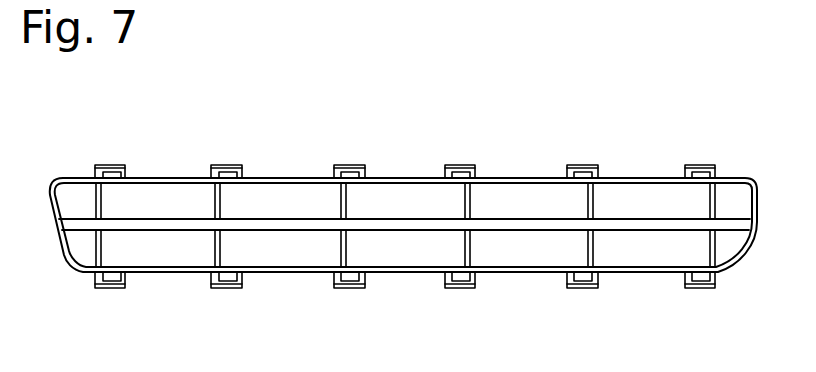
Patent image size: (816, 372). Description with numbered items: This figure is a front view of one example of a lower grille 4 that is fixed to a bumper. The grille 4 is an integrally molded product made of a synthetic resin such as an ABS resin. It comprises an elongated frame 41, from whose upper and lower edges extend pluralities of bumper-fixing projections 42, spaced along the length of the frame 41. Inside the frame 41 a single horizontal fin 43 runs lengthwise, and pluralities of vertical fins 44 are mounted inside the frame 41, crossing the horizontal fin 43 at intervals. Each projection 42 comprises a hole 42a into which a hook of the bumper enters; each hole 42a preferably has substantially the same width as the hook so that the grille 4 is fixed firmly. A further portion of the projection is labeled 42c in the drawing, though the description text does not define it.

The grille 4 is at (403, 136).
The frame 41 is at (740, 252).
The bumper-fixing projection 42 is at (717, 173).
The hole 42a is at (703, 174).
The clip base 42c is at (687, 166).
The horizontal fin 43 is at (397, 232).
The vertical fin 44 is at (342, 243).